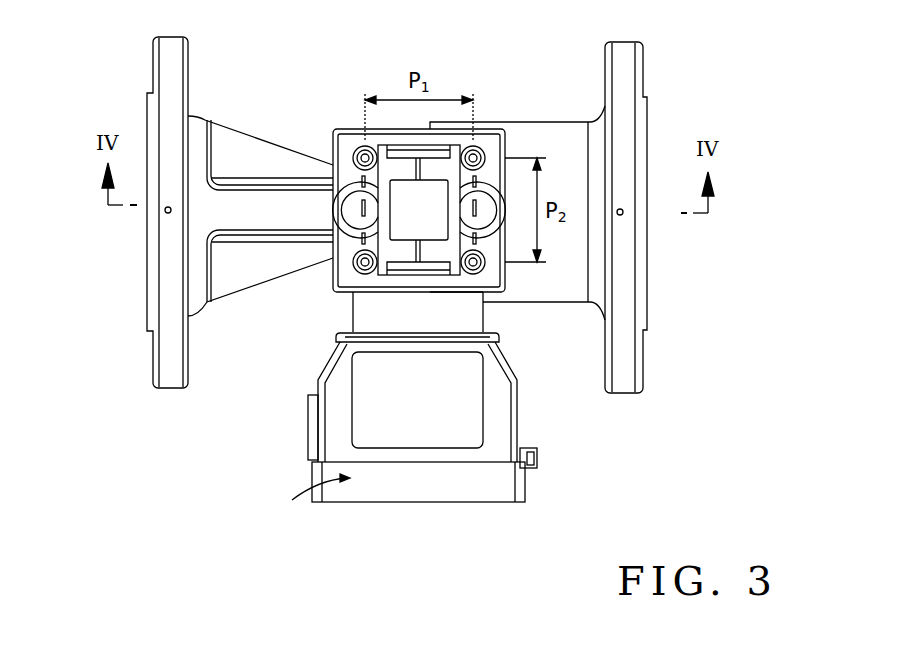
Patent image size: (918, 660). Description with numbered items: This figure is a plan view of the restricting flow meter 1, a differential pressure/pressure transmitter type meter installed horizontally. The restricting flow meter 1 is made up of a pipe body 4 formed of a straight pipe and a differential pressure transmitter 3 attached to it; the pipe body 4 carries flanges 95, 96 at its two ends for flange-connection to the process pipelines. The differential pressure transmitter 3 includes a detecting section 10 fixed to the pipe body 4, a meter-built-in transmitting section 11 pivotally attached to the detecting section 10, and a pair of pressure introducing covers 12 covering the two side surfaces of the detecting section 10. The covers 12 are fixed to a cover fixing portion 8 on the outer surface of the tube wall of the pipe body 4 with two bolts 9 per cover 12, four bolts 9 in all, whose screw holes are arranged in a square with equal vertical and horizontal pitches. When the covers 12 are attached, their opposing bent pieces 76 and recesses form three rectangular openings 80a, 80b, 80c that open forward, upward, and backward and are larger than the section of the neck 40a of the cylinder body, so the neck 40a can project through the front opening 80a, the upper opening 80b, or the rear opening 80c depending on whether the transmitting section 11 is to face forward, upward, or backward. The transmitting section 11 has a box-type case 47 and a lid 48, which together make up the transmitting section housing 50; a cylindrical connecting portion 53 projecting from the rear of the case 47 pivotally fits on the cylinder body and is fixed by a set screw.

The restricting flow meter 1 is at (747, 48).
The differential pressure transmitter 3 is at (492, 146).
The pipe body 4 is at (658, 30).
The cover fixing portion 8 is at (507, 150).
The bolt 9 is at (356, 152).
The detecting section 10 is at (431, 223).
The transmitting section 11 is at (429, 440).
The pressure introducing cover 12 is at (350, 222).
The neck 40a is at (445, 290).
The case 47 is at (518, 428).
The lid 48 is at (520, 488).
The transmitting section housing 50 is at (621, 440).
The connecting portion 53 is at (352, 322).
The clamp bar 76 is at (392, 152).
The front opening 80a is at (418, 272).
The upper opening 80b is at (342, 337).
The rear opening 80c is at (437, 150).
The flange 95 is at (625, 63).
The flange 96 is at (178, 44).